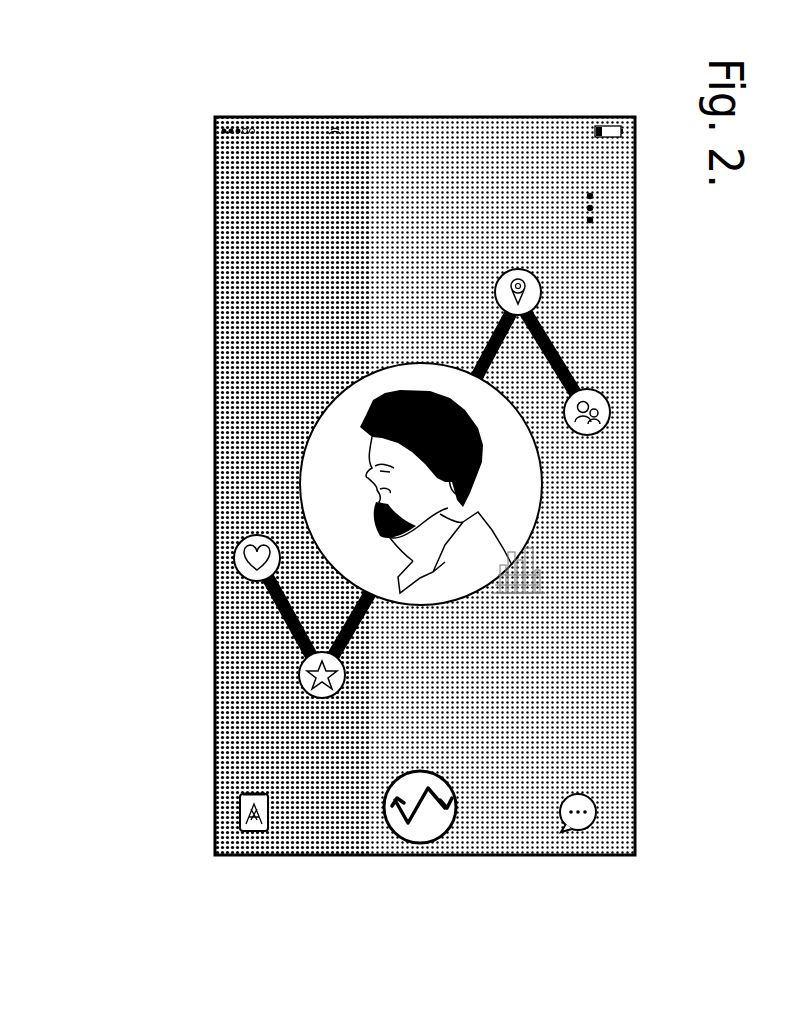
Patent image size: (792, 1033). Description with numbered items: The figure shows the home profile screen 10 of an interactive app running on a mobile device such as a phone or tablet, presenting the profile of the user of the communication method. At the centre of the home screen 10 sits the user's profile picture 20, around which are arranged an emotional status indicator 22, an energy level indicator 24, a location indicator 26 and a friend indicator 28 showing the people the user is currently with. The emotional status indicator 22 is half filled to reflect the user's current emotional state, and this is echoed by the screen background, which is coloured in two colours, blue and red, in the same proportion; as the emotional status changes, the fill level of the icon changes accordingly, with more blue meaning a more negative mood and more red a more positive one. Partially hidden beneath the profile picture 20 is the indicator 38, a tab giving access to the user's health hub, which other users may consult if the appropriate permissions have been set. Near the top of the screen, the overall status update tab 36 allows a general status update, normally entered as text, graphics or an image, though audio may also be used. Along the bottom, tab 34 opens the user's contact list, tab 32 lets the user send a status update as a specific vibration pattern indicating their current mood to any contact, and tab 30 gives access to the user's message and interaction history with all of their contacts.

The home profile screen 10 is at (638, 304).
The central profile picture 20 is at (535, 533).
The emotional status indicator 22 is at (235, 558).
The energy level indicator 24 is at (313, 696).
The location indicator 26 is at (538, 305).
The friend indicator 28 is at (608, 422).
The message and interaction history tab 30 is at (598, 812).
The vibration status update tab 32 is at (442, 829).
The contact list tab 34 is at (241, 833).
The overall status update tab 36 is at (448, 187).
The health hub indicator 38 is at (515, 582).